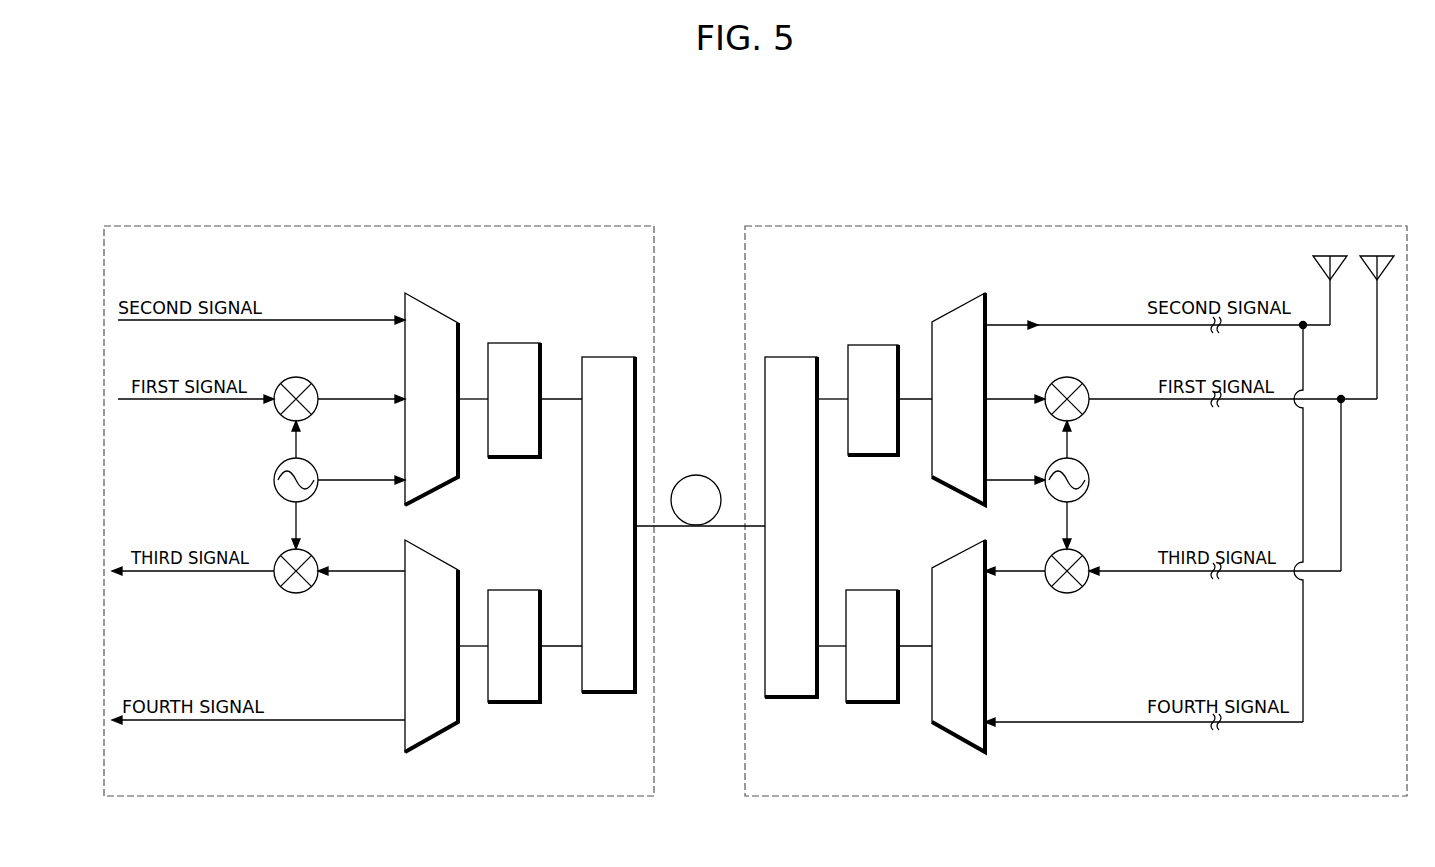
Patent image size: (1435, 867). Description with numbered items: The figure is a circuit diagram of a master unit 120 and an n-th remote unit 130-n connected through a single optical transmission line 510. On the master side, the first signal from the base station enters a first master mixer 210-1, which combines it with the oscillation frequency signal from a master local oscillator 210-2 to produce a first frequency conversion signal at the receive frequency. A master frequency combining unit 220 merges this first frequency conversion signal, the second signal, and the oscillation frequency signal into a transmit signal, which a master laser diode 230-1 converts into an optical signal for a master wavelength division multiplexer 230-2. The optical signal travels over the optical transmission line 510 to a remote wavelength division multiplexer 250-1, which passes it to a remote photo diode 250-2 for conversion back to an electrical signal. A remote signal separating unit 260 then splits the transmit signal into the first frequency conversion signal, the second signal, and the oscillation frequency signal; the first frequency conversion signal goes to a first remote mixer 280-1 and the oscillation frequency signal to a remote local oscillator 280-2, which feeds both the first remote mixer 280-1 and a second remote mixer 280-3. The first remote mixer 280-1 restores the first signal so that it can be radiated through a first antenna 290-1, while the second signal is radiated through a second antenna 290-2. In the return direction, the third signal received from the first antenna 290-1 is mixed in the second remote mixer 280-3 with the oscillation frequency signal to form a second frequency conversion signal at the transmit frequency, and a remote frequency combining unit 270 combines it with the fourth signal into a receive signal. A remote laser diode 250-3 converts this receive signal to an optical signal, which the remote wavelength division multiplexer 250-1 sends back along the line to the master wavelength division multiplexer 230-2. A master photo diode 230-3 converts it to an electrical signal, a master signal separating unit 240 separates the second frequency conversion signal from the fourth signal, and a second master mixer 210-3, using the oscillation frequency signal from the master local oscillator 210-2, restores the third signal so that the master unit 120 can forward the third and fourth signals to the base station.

The master unit 120 is at (580, 226).
The n-th remote unit 130-n is at (1050, 226).
The first master mixer 210-1 is at (311, 386).
The master local oscillator 210-2 is at (311, 468).
The second master mixer 210-3 is at (311, 558).
The master frequency combining unit 220 is at (440, 302).
The master laser diode 230-1 is at (515, 343).
The master wavelength division multiplexer 230-2 is at (600, 357).
The master photo diode 230-3 is at (522, 703).
The master signal separating unit 240 is at (440, 735).
The optical transmission line 510 is at (708, 476).
The remote wavelength division multiplexer 250-1 is at (790, 357).
The remote photo diode 250-2 is at (875, 345).
The remote laser diode 250-3 is at (875, 590).
The remote signal separating unit 260 is at (990, 310).
The remote frequency combining unit 270 is at (945, 735).
The first remote mixer 280-1 is at (1088, 386).
The remote local oscillator 280-2 is at (1088, 470).
The second remote mixer 280-3 is at (1088, 560).
The first antenna 290-1 is at (1320, 256).
The second antenna 290-2 is at (1384, 256).